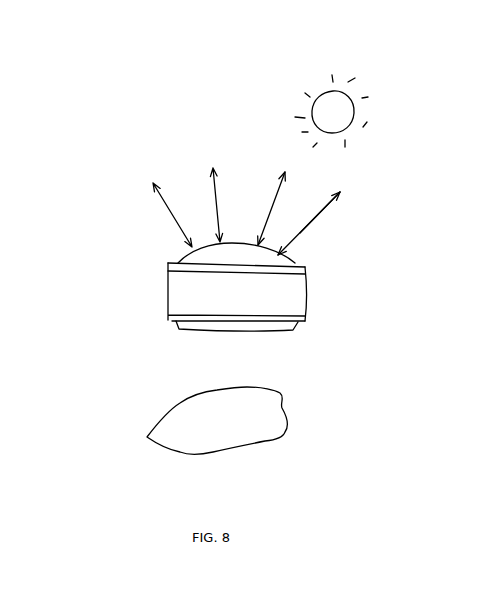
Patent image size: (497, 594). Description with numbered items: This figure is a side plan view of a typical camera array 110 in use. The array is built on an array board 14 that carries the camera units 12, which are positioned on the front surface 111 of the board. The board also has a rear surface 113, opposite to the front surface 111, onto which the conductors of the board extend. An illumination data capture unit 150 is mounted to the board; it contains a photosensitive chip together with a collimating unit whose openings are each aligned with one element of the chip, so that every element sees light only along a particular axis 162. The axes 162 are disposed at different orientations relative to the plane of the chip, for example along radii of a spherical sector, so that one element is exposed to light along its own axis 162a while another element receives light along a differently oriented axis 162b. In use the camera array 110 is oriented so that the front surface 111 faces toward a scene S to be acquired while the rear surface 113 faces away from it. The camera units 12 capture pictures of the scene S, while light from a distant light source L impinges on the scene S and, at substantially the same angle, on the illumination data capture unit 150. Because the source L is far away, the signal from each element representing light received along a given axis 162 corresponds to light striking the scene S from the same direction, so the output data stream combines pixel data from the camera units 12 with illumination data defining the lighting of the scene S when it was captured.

The camera array 110 is at (223, 269).
The array board 14 is at (168, 290).
The camera units 12 is at (299, 327).
The front surface 111 is at (307, 318).
The rear surface 113 is at (303, 271).
The illumination data capture unit 150 is at (298, 262).
The axis 162 is at (305, 228).
The axis 162a is at (334, 200).
The reflected light ray 162b is at (284, 180).
The light source L is at (352, 96).
The scene S is at (155, 447).